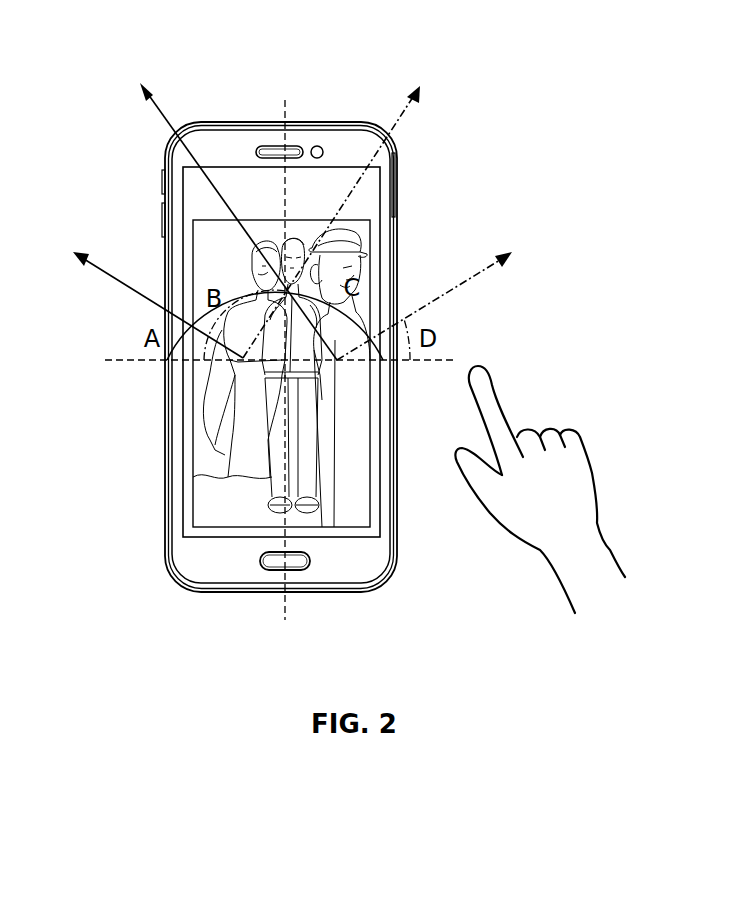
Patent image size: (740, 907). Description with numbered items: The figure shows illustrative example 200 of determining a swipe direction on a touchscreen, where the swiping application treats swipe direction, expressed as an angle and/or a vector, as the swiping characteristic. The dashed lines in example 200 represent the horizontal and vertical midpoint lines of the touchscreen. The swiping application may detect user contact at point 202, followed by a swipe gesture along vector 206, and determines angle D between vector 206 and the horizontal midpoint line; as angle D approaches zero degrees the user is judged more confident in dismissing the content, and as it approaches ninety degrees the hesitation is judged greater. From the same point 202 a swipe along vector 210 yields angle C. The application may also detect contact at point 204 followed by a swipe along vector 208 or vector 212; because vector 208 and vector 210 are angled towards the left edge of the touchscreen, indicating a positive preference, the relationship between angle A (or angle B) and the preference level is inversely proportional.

The illustrative example 200 is at (259, 33).
The point 202 is at (336, 401).
The point 204 is at (210, 401).
The vector 206 is at (470, 278).
The vector 208 is at (95, 266).
The vector 210 is at (157, 110).
The vector 212 is at (400, 117).